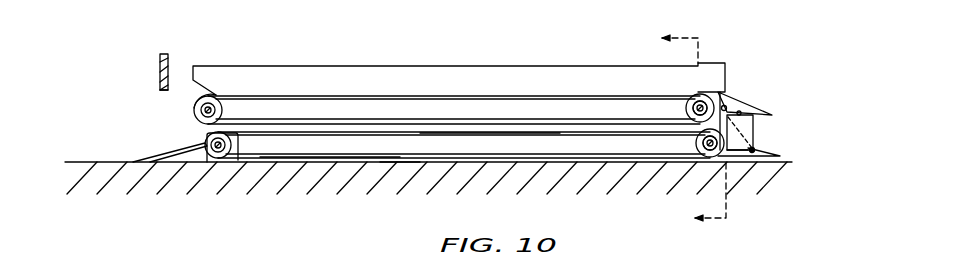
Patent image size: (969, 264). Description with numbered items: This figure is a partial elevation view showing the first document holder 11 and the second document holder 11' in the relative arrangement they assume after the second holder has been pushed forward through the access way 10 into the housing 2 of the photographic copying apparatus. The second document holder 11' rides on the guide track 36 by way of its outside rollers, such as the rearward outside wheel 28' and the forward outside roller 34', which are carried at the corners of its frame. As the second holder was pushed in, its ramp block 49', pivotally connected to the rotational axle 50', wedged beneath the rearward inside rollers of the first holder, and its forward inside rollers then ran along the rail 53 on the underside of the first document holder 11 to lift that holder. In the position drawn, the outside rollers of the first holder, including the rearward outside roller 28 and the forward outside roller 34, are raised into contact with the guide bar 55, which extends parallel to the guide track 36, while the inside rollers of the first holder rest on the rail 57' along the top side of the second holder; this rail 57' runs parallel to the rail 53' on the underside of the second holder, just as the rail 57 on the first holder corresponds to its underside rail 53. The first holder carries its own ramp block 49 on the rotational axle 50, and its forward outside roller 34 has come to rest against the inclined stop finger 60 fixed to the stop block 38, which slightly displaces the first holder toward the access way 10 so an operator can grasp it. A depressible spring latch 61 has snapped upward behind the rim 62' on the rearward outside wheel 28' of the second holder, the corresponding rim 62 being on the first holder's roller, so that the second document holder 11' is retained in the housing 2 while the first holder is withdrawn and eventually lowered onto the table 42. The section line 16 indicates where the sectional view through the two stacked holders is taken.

The housing 2 is at (158, 72).
The access way 10 is at (163, 92).
The first document holder 11 is at (455, 79).
The second document holder 11' is at (465, 180).
The section line 16- 16 is at (680, 127).
The rearward outside roller 28 is at (202, 84).
The rearward outside wheel 28' is at (184, 136).
The forward outside roller 34 is at (676, 95).
The forward outside roller 34' is at (703, 161).
The guide track 36 is at (397, 163).
The stop block 38 is at (753, 126).
The table 42 is at (83, 162).
The ramp block 49 is at (758, 92).
The ramp block 49' is at (782, 142).
The rotational axle 50 is at (663, 106).
The rotational axle 50' is at (682, 139).
The rail 53 is at (490, 115).
The rail 53' is at (322, 188).
The guide bar 55 is at (320, 77).
The rail 57 is at (454, 83).
The rail 57' is at (464, 114).
The inclined stop finger 60 is at (718, 100).
The depressible spring latch 61 is at (197, 145).
The rim 62 is at (232, 91).
The rim 62' is at (246, 146).